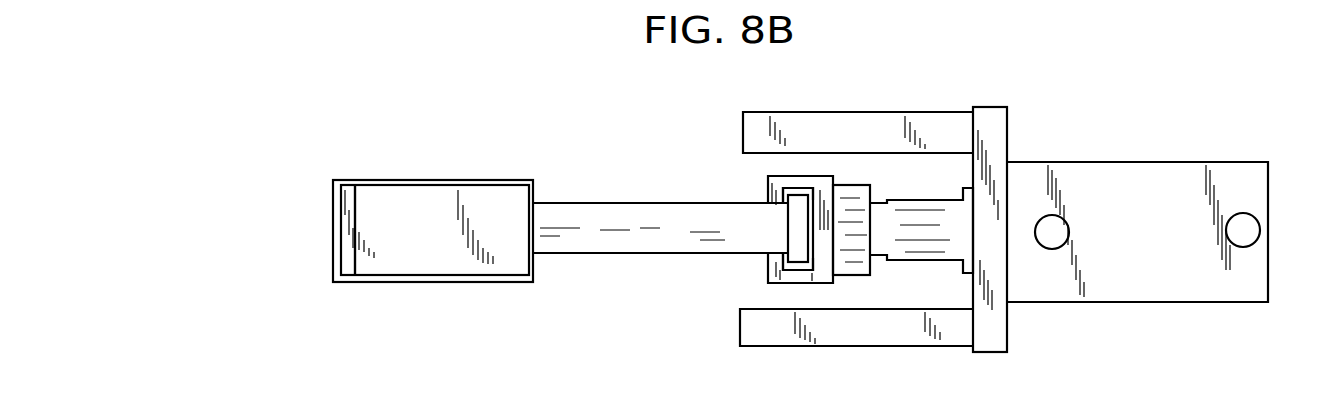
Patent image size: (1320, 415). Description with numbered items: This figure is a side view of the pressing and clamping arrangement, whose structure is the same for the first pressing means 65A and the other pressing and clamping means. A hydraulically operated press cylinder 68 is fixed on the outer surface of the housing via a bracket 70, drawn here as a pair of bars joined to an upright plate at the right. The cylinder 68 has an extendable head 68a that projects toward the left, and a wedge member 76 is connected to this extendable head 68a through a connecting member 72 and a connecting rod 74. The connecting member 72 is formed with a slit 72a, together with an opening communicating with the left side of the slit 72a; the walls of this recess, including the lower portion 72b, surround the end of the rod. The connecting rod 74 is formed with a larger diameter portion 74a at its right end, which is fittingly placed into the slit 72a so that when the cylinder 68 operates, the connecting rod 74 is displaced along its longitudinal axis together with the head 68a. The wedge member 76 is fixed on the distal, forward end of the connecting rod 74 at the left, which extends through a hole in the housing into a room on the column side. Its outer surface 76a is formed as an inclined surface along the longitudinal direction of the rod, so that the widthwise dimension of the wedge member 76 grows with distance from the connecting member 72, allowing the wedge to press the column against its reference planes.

The first pressing means 65A is at (1017, 100).
The hydraulically operated press cylinder 68 is at (1127, 185).
The extendable head 68a is at (878, 218).
The bracket 70 is at (937, 128).
The connecting member 72 is at (803, 188).
The slit 72a is at (792, 189).
The lower recess wall 72b is at (779, 253).
The connecting rod 74 is at (615, 217).
The shaft head 74a is at (798, 252).
The wedge member 76 is at (433, 178).
The outer surface 76a is at (473, 250).